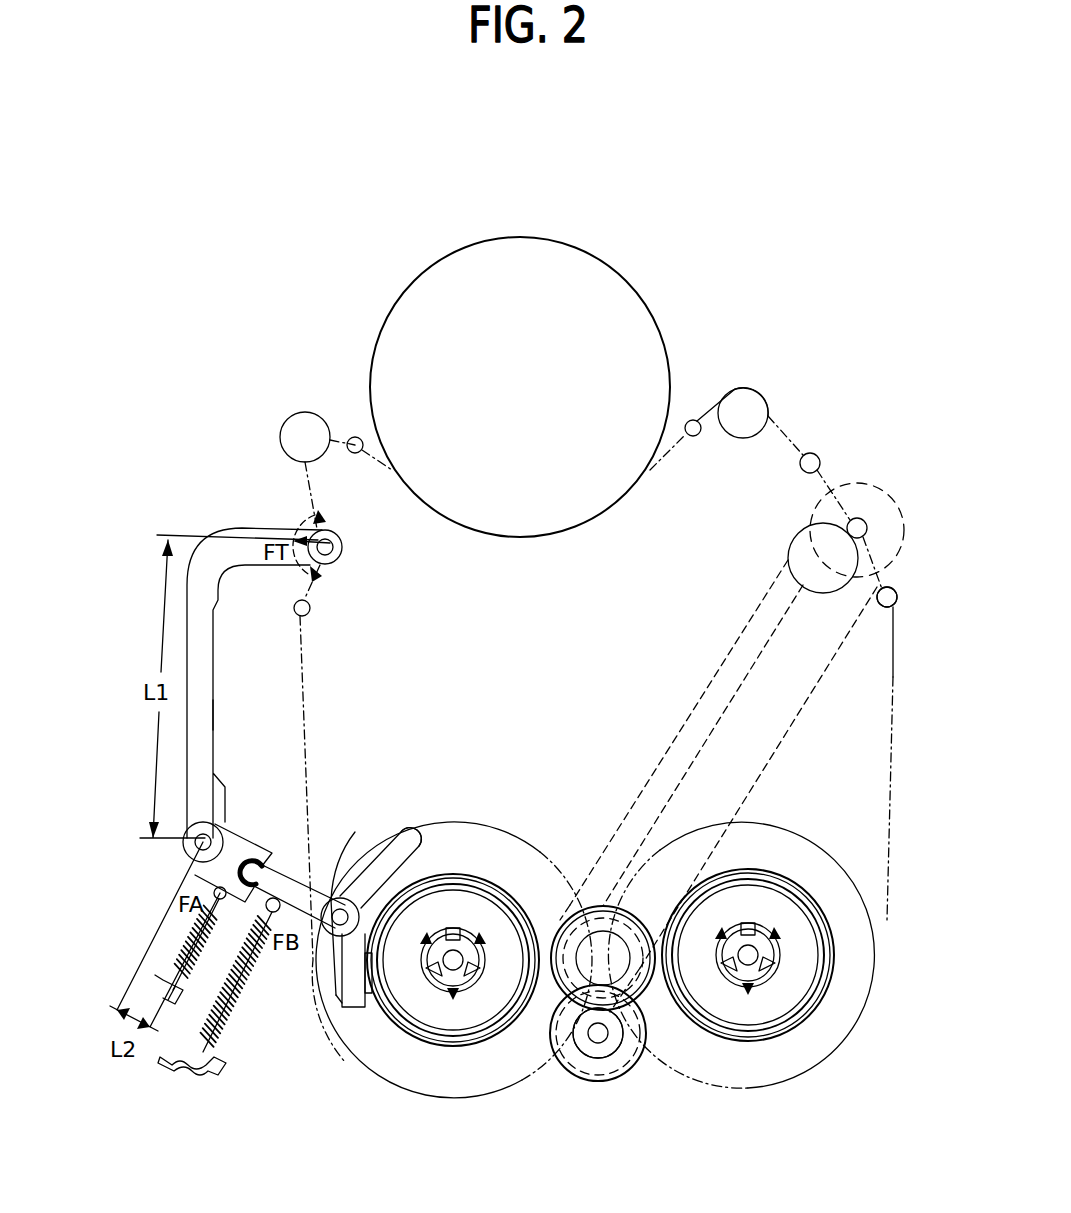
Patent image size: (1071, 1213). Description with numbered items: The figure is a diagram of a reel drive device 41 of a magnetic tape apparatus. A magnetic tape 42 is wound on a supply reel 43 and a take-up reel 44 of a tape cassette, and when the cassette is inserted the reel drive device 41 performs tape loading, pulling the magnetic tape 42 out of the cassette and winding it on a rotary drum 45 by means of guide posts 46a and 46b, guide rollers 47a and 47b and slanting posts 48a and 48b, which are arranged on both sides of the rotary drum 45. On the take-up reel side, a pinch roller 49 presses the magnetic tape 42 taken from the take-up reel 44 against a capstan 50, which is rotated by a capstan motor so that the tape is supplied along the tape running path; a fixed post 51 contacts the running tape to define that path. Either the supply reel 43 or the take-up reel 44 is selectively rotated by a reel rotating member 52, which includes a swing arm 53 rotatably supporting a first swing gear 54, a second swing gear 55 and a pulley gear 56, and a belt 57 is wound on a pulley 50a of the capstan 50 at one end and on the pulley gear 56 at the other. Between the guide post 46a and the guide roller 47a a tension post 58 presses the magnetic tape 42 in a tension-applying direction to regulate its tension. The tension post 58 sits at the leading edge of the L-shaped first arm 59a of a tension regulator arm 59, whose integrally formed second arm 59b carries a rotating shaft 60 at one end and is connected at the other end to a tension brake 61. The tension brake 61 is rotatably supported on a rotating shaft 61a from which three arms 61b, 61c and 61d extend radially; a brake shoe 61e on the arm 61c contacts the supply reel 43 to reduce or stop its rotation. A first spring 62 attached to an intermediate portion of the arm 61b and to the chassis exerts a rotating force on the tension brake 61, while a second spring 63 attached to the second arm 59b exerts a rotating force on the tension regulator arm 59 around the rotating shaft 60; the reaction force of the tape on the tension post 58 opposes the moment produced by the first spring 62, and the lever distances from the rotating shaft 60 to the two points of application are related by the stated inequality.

The reel drive device 41 is at (300, 195).
The magnetic tape 42 is at (303, 665).
The supply reel 43 is at (412, 1047).
The take-up reel 44 is at (807, 1028).
The rotary drum 45 is at (520, 237).
The guide post 46a is at (310, 606).
The guide post 46b is at (880, 607).
The guide roller 47a is at (283, 438).
The guide roller 47b is at (750, 400).
The slanting post 48a is at (352, 437).
The slanting post 48b is at (692, 420).
The pinch roller 49 is at (800, 587).
The capstan 50 is at (863, 518).
The pulley 50a is at (892, 586).
The fixed post 51 is at (810, 452).
The reel rotating member 52 is at (592, 1087).
The swing arm 53 is at (622, 1070).
The first swing gear 54 is at (593, 906).
The second swing gear 55 is at (556, 1068).
The pulley gear 56 is at (655, 893).
The belt 57 is at (700, 690).
The tension post 58 is at (342, 547).
The tension regulator arm 59 is at (188, 575).
The first arm 59a is at (213, 710).
The second arm 59b is at (253, 838).
The rotating shaft 60 is at (215, 832).
The tension brake 61 is at (376, 850).
The rotating shaft 61a is at (337, 896).
The arm 61b is at (352, 830).
The arm 61c is at (340, 1000).
The arm 61d is at (400, 845).
The brake shoe 61e is at (367, 995).
The first spring 62 is at (243, 1003).
The second spring 63 is at (178, 927).